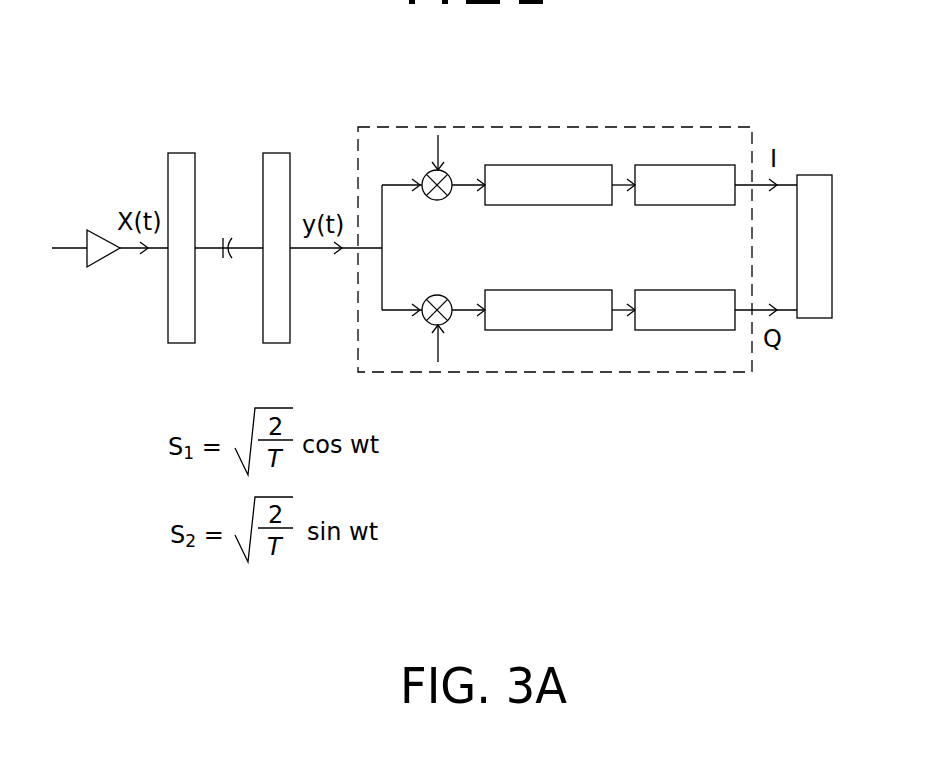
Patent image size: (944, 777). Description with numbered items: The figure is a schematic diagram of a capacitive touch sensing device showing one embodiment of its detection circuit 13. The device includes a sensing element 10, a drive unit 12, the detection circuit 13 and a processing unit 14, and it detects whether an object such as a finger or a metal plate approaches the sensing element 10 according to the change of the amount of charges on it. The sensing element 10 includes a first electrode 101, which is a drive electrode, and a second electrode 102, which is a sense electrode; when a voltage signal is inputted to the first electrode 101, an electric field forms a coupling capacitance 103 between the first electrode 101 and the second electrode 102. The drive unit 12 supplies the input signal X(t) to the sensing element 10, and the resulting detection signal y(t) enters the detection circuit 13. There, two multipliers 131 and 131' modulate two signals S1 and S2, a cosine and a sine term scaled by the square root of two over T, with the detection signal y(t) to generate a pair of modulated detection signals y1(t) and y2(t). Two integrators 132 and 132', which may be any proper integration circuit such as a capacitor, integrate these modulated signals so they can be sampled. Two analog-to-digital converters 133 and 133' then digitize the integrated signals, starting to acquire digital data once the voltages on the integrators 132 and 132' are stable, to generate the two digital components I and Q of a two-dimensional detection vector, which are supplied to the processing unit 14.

The sensing element 10 is at (292, 67).
The first electrode 101 is at (181, 153).
The second electrode 102 is at (276, 153).
The coupling capacitance 103 is at (223, 265).
The drive unit 12 is at (102, 233).
The detection circuit 13 is at (629, 127).
The multiplier 131 is at (450, 146).
The multiplier 131' is at (455, 346).
The integrator 132 is at (548, 132).
The integrator 132' is at (548, 359).
The analog-to-digital converter 133 is at (685, 130).
The analog-to-digital converter 133' is at (685, 359).
The processing unit 14 is at (818, 175).